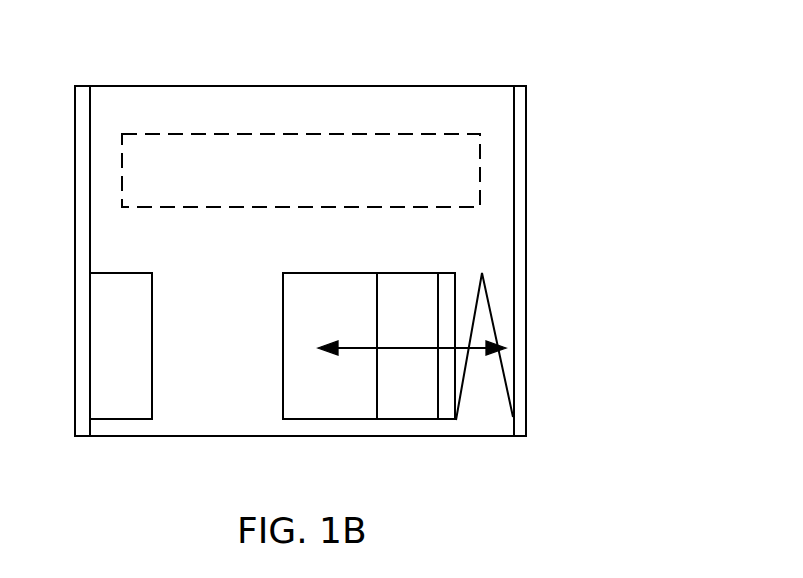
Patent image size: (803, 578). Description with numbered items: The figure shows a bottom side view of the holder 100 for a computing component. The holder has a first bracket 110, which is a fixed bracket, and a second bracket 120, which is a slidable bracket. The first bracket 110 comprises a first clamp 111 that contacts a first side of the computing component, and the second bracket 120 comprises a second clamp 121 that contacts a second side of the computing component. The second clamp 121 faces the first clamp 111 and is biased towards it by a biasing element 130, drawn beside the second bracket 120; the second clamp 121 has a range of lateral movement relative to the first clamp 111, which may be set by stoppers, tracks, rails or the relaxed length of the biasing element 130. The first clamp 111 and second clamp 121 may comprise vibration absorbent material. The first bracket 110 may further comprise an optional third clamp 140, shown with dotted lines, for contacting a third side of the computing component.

The device 100 is at (348, 270).
The first bracket 110 is at (527, 342).
The first clamp 111 is at (118, 409).
The second bracket 120 is at (359, 391).
The second clamp 121 is at (415, 412).
The biasing element 130 is at (467, 372).
The third clamp 140 is at (462, 189).